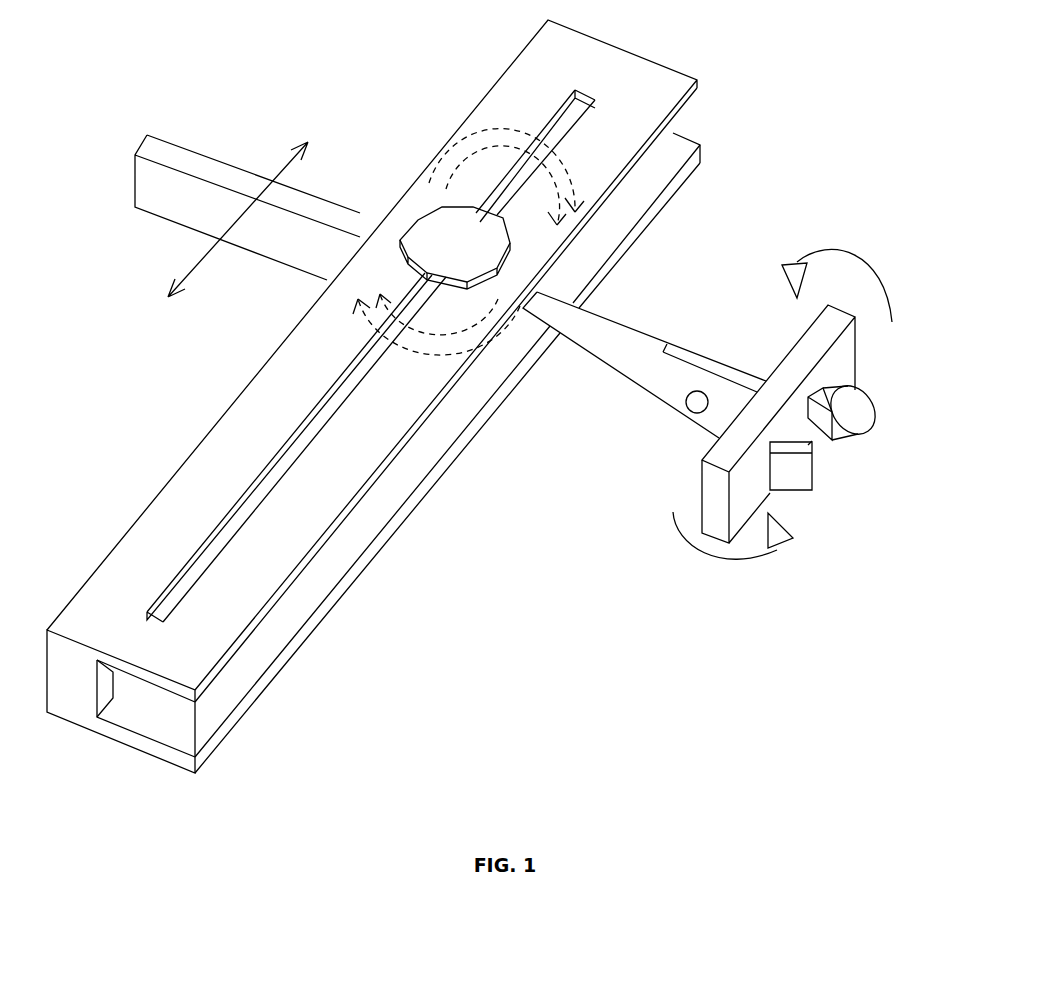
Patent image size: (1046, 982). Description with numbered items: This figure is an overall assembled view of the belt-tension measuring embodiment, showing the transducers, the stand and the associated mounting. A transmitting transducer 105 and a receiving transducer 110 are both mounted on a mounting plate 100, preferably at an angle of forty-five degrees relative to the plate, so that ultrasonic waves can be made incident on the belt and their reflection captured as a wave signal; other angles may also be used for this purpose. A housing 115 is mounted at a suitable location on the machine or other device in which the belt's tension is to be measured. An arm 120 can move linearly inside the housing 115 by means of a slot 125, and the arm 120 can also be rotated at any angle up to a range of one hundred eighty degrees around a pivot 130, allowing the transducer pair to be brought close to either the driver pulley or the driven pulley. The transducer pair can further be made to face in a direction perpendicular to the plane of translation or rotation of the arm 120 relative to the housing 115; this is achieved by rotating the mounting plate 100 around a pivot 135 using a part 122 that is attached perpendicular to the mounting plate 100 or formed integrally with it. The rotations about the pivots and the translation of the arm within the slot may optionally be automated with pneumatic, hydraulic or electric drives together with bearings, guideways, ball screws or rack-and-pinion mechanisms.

The mounting plate 100 is at (770, 503).
The transmitting transducer 105 is at (868, 392).
The receiving transducer 110 is at (805, 463).
The housing 115 is at (262, 695).
The arm 120 is at (118, 177).
The part 122 is at (708, 358).
The slot 125 is at (275, 432).
The pivot 130 is at (428, 237).
The pivot 135 is at (687, 410).